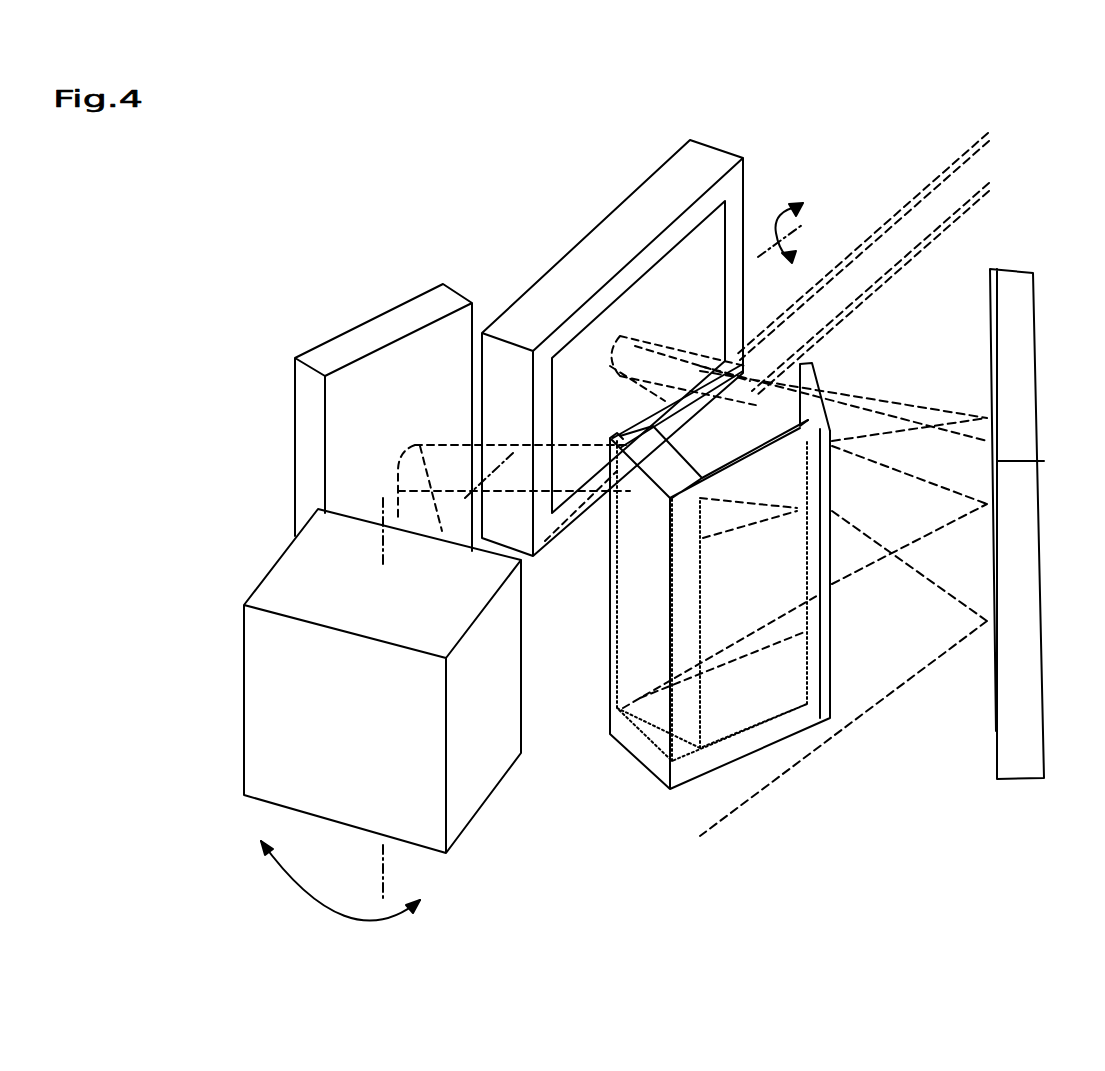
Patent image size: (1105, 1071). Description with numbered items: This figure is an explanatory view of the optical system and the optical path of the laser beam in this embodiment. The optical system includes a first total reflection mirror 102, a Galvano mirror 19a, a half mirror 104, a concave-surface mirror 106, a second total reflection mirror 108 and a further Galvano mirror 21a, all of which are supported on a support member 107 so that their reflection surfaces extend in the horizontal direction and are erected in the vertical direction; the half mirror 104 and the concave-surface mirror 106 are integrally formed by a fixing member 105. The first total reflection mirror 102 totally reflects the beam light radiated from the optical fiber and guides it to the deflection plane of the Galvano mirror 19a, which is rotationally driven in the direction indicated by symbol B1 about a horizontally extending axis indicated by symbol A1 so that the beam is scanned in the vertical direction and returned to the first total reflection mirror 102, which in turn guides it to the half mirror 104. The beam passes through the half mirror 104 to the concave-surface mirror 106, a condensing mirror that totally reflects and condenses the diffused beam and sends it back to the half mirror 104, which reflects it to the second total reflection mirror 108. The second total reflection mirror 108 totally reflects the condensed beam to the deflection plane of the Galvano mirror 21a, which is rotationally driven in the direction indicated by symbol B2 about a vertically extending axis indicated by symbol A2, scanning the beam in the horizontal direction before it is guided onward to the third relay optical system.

The Galvano mirror 19a is at (593, 242).
The Galvano mirror 21a is at (279, 572).
The first total reflection mirror 102 is at (1013, 277).
The half mirror 104 is at (815, 368).
The fixing member 105 is at (630, 738).
The concave-surface mirror 106 is at (632, 605).
The support member 107 is at (711, 597).
The second total reflection mirror 108 is at (365, 333).
The axis A1 is at (755, 245).
The axis A2 is at (383, 533).
The rotation direction B1 is at (801, 233).
The rotation direction B2 is at (340, 888).